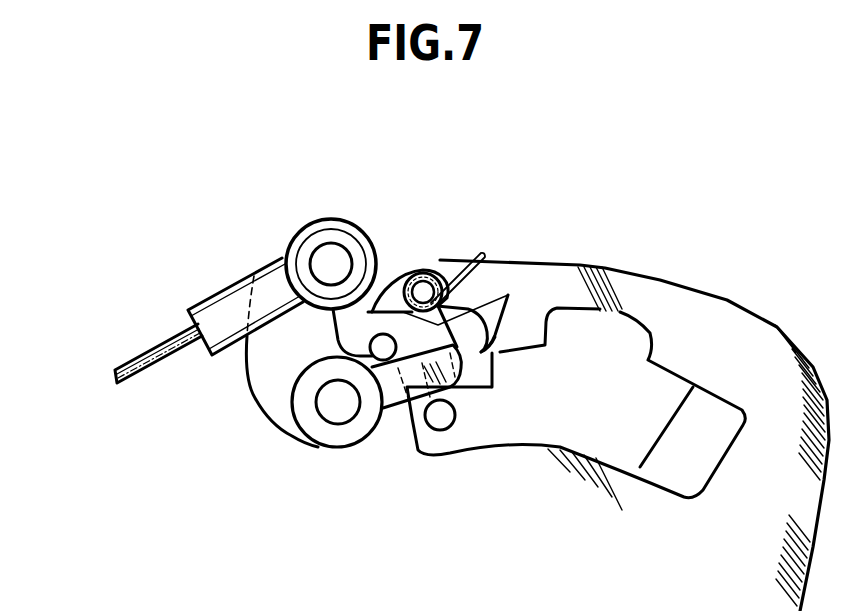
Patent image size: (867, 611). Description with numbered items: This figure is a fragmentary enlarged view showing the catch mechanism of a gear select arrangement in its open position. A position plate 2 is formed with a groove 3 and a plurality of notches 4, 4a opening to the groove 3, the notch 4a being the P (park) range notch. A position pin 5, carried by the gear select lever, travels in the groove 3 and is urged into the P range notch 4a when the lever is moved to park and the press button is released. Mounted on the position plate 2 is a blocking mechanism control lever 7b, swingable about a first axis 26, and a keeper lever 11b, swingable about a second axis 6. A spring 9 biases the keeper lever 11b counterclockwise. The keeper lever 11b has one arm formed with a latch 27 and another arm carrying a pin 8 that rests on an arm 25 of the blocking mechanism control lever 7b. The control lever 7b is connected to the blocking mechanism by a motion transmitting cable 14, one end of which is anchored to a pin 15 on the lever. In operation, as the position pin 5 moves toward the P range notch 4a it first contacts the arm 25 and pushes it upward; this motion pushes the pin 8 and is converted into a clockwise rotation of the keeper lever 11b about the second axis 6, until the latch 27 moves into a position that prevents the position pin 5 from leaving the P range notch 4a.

The position plate 2 is at (633, 293).
The groove 3 is at (690, 398).
The notch 4 is at (598, 314).
The P range notch 4a is at (508, 295).
The position pin 5 is at (443, 417).
The second axis 6 is at (424, 290).
The blocking mechanism control lever 7b is at (263, 382).
The roller 8 is at (377, 348).
The spring 9 is at (470, 255).
The keeper lever 11b is at (390, 303).
The motion transmitting cable 14 is at (131, 358).
The pin 15 is at (325, 262).
The arm 25 is at (417, 400).
The first axis 26 is at (330, 407).
The latch 27 is at (497, 355).